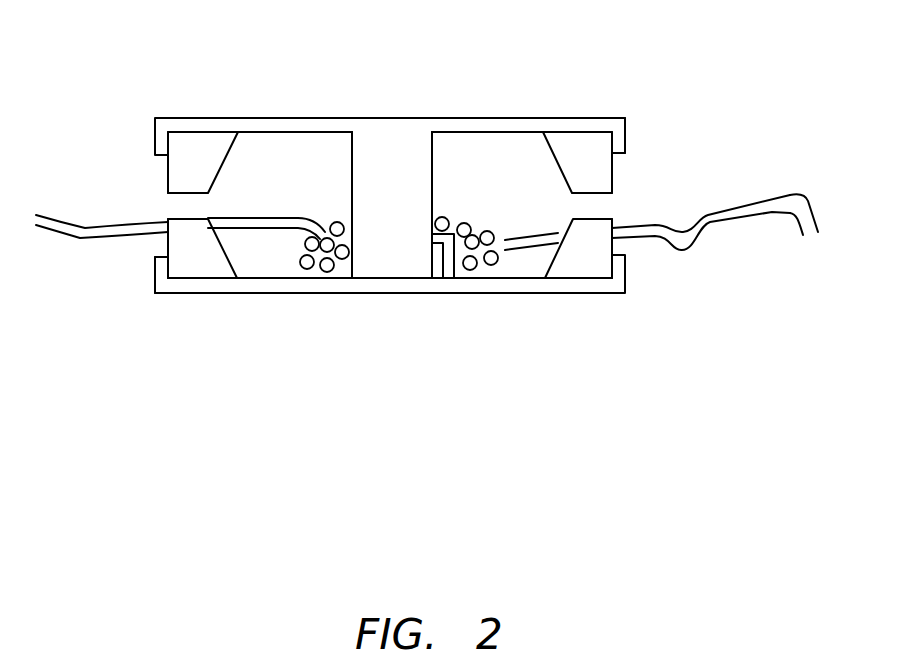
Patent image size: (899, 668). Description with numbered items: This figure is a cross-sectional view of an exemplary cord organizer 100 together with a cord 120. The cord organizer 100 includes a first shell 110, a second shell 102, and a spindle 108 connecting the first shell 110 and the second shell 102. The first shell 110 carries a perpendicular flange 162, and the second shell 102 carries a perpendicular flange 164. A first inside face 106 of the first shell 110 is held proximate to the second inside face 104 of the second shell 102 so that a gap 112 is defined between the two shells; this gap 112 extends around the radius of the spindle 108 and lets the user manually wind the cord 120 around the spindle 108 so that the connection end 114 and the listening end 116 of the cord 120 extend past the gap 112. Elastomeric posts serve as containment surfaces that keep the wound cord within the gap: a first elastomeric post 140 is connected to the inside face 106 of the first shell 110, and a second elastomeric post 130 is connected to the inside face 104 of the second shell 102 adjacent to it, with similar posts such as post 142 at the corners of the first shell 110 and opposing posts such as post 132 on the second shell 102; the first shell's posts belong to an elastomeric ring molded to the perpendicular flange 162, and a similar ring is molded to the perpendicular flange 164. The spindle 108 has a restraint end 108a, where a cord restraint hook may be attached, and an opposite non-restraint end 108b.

The cord organizer 100 is at (774, 80).
The second shell 102 is at (248, 118).
The second inside face 104 is at (298, 135).
The first inside face 106 is at (285, 277).
The spindle 108 is at (412, 220).
The restraint end 108a is at (392, 267).
The non-restraint end 108b is at (400, 133).
The first shell 110 is at (258, 295).
The gap 112 is at (305, 203).
The connection end 114 is at (61, 240).
The listening end 116 is at (752, 215).
The cord 120 is at (818, 217).
The second elastomeric post 130 is at (612, 170).
The elastomeric post 132 is at (167, 177).
The first elastomeric post 140 is at (612, 246).
The elastomeric post 142 is at (167, 240).
The perpendicular flange 162 is at (155, 287).
The perpendicular flange 164 is at (627, 142).